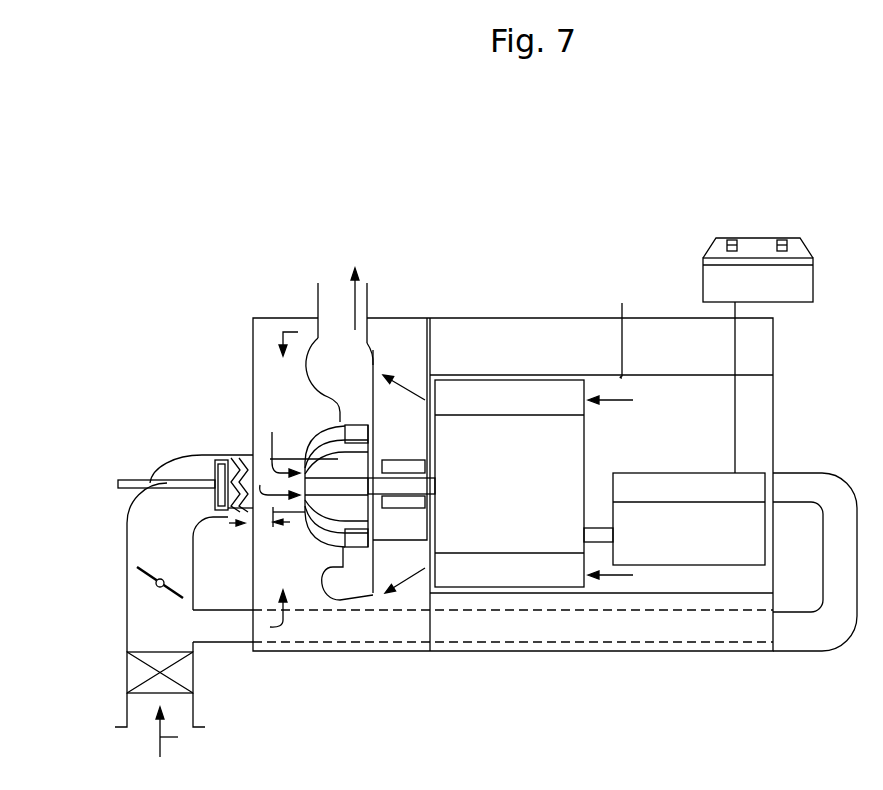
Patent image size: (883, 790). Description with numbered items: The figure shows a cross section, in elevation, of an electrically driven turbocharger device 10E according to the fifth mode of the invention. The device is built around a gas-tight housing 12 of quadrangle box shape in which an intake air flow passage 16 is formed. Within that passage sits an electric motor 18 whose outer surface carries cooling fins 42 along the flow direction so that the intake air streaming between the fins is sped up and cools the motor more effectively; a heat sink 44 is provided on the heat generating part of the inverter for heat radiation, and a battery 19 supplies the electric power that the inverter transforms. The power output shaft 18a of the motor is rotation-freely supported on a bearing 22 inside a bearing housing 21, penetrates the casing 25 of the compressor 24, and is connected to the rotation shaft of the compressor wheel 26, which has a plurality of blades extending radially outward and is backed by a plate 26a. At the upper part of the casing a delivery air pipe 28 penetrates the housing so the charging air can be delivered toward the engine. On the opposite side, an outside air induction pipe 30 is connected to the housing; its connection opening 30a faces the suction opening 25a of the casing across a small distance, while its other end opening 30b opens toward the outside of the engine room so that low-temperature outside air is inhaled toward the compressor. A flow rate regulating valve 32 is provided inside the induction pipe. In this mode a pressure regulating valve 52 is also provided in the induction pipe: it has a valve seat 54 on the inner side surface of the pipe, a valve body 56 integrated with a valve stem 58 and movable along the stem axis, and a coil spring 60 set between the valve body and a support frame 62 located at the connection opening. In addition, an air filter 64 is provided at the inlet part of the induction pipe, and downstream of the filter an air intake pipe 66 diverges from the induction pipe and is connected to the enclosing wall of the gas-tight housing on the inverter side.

The electrically driven turbocharger device 10E is at (572, 141).
The gas-tight housing 12 is at (676, 318).
The intake air flow passage 16 is at (622, 327).
The electric motor 18 is at (557, 562).
The power output shaft 18a is at (388, 460).
The battery 19 is at (814, 280).
The bearing housing 21 is at (430, 556).
The bearing 22 is at (418, 462).
The compressor 24 is at (329, 416).
The casing 25 is at (375, 350).
The suction opening 25a is at (298, 468).
The compressor wheel 26 is at (315, 516).
The impeller back plate 26a is at (350, 548).
The delivery air pipe 28 is at (370, 303).
The outside air induction pipe 30 is at (125, 549).
The connection opening 30a is at (232, 456).
The end opening 30b is at (135, 726).
The flow rate regulating valve 32 is at (140, 581).
The cooling fins 42 is at (528, 380).
The heat sink 44 is at (688, 473).
The pressure regulating valve 52 is at (175, 469).
The valve seat 54 is at (217, 458).
The valve body 56 is at (223, 458).
The valve stem 58 is at (137, 477).
The coil spring 60 is at (229, 519).
The support frame 62 is at (243, 457).
The air filter 64 is at (194, 669).
The air intake pipe 66 is at (812, 652).